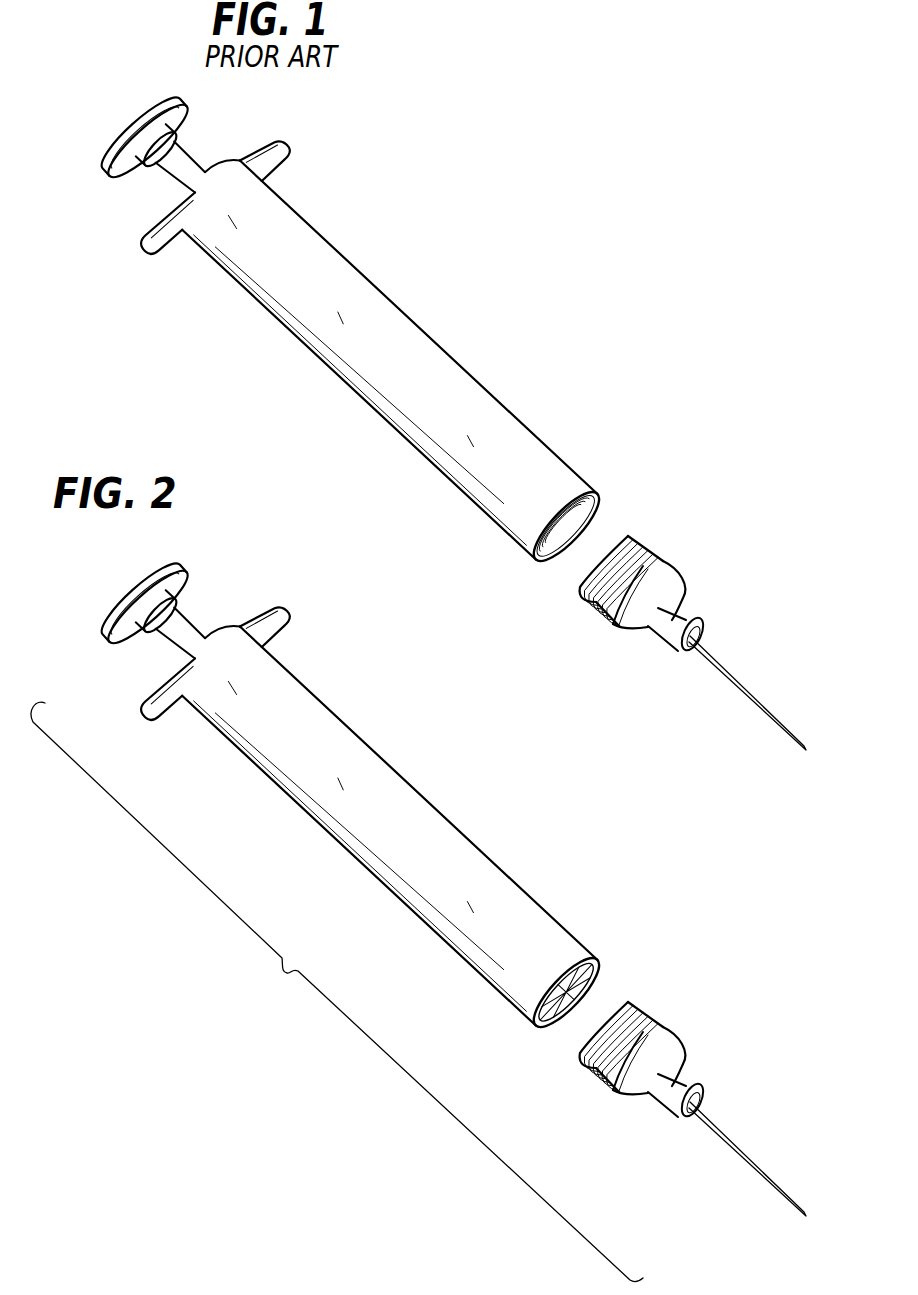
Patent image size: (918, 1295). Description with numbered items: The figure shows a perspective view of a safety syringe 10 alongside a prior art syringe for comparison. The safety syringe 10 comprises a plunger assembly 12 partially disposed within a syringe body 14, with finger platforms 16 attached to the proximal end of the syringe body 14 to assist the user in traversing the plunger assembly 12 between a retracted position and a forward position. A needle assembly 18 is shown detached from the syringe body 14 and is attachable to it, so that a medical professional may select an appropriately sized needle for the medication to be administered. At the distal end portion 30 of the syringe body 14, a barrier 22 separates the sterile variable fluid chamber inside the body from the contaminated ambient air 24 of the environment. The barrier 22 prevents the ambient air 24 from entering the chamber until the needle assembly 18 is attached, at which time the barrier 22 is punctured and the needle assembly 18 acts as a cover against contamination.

The safety syringe 10 is at (337, 991).
The plunger assembly 12 is at (200, 563).
The syringe body 14 is at (447, 780).
The finger platforms 16 is at (268, 607).
The needle assembly 18 is at (683, 1009).
The barrier 22 is at (598, 985).
The contaminated ambient air 24 is at (498, 1063).
The distal end portion 30 is at (608, 953).